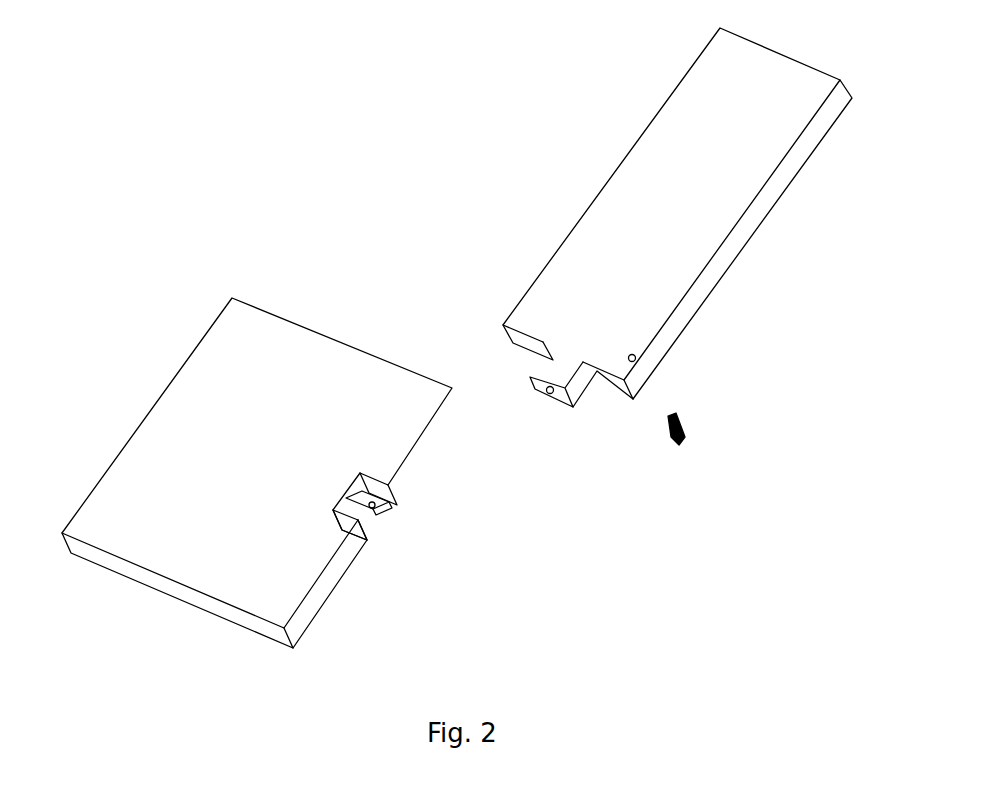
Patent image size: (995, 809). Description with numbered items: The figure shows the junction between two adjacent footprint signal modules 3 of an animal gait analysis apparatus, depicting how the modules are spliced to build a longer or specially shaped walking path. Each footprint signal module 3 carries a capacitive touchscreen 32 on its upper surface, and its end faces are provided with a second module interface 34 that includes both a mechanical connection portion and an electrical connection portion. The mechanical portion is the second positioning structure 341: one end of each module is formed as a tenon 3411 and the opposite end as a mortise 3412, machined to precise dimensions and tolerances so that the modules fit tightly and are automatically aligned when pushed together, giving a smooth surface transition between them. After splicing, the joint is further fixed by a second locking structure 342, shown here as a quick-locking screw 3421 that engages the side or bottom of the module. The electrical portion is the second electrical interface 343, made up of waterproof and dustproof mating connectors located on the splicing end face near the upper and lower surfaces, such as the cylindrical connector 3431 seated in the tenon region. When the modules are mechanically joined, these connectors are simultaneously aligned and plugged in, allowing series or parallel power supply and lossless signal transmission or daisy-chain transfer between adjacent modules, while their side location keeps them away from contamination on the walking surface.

The footprint signal module 3 is at (160, 493).
The capacitive touchscreen 32 is at (185, 462).
The second module interface 34 is at (545, 373).
The second positioning structure 341 is at (553, 370).
The tenon 3411 is at (548, 366).
The mortise 3412 is at (370, 532).
The second locking structure 342 is at (672, 418).
The screw 3421 is at (670, 417).
The second electrical interface 343 is at (375, 509).
The cylindrical connector 3431 is at (377, 514).